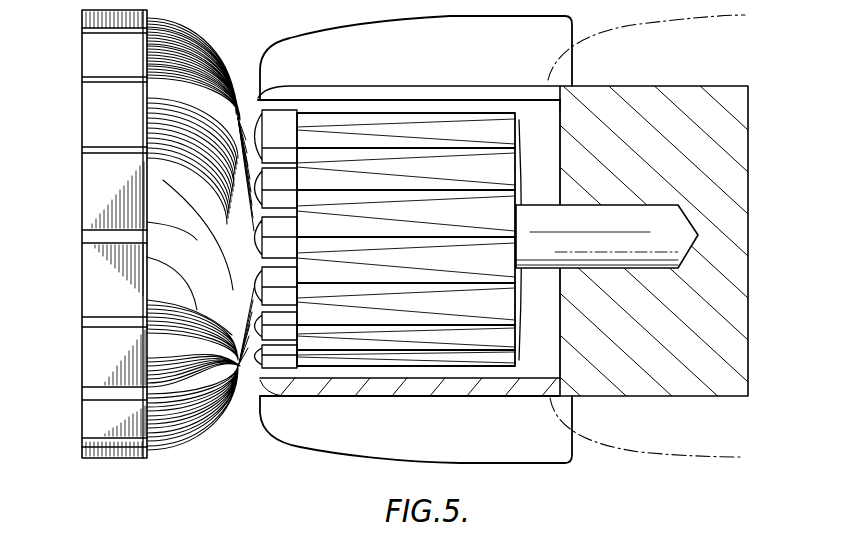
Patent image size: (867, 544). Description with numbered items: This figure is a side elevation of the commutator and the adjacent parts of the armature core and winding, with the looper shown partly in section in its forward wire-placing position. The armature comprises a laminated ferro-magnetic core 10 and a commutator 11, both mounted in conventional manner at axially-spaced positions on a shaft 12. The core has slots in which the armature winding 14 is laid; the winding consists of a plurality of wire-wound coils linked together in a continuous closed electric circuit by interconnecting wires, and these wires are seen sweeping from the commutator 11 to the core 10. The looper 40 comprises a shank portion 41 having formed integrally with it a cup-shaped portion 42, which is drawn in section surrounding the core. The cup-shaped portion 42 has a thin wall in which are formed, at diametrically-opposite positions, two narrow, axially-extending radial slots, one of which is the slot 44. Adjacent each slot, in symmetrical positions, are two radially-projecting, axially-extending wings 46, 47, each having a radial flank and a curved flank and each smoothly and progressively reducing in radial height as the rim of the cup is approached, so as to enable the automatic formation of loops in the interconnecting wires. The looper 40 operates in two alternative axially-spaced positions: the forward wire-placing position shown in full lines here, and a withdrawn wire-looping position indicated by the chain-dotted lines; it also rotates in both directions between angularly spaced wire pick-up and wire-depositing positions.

The laminated ferro-magnetic core 10 is at (107, 460).
The commutator 11 is at (517, 129).
The shaft 12 is at (539, 243).
The armature winding 14 is at (225, 400).
The looper 40 is at (530, 463).
The shank portion 41 is at (683, 143).
The cup-shaped portion 42 is at (535, 388).
The radial slot 44 is at (258, 97).
The wing 46 is at (347, 27).
The wing 47 is at (367, 455).